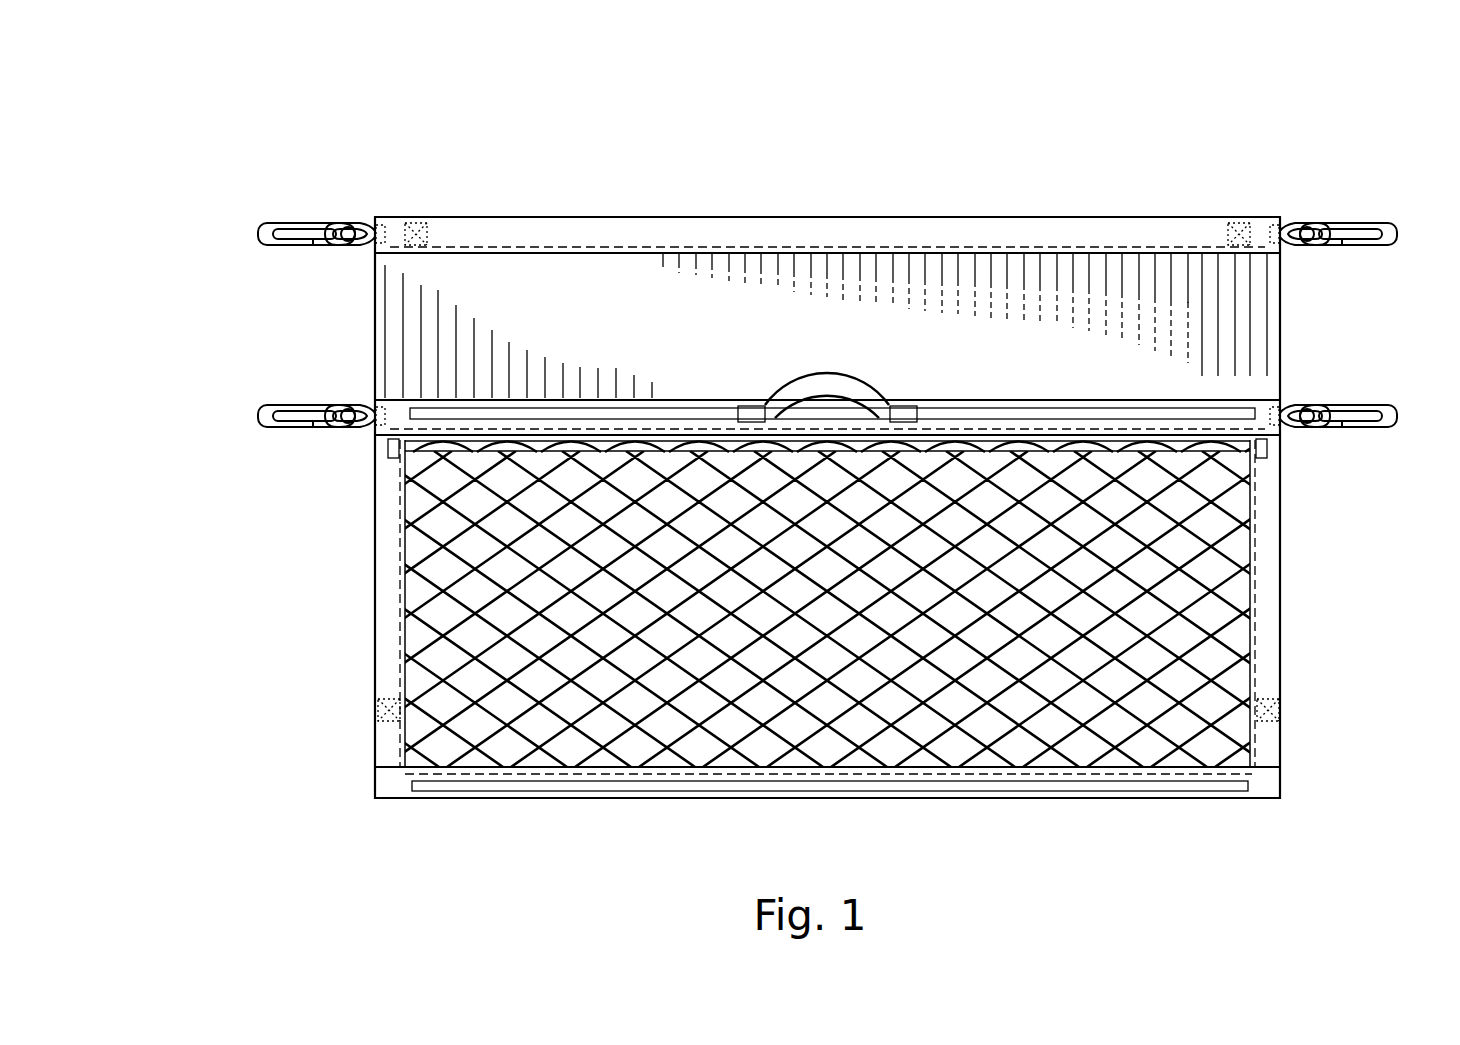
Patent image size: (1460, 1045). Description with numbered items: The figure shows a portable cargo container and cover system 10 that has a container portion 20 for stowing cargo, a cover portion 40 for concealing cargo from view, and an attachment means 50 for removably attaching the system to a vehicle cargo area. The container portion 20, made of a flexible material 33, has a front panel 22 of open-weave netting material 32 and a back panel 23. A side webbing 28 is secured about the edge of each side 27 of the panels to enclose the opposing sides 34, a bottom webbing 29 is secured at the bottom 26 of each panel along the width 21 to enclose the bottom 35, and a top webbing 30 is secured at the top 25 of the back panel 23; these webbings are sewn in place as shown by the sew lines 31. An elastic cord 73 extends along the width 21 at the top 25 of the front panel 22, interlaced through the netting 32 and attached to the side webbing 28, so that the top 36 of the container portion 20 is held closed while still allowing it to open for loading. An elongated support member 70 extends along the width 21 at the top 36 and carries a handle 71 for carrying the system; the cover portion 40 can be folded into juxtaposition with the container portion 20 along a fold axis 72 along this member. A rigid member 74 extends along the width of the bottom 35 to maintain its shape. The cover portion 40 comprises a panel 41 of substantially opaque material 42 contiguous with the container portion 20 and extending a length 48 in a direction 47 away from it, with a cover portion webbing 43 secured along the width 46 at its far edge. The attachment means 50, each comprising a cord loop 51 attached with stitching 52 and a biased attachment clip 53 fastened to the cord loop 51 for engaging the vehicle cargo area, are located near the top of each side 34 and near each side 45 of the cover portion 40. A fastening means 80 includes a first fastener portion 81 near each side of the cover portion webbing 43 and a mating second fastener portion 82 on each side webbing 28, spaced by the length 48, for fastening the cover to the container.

The portable cargo container and cover system 10 is at (262, 135).
The container portion 20 is at (1240, 818).
The width 21 is at (1005, 823).
The front panel 22 is at (730, 667).
The back panel 23 is at (512, 655).
The top 25 is at (893, 256).
The bottom 26 is at (957, 818).
The side 27 is at (335, 640).
The side webbing 28 is at (822, 603).
The bottom webbing 29 is at (827, 831).
The top webbing 30 is at (858, 291).
The sew lines 31 is at (398, 770).
The netting material 32 is at (865, 670).
The flexible material 33 is at (1148, 705).
The opposing sides 34 is at (375, 658).
The bottom 35 is at (258, 778).
The top 36 is at (215, 410).
The cover portion 40 is at (827, 183).
The panel 41 is at (660, 320).
The substantially opaque material 42 is at (535, 290).
The cover portion webbing 43 is at (620, 240).
The side 45 is at (1300, 335).
The width 46 is at (905, 178).
The direction 47 is at (150, 255).
The length 48 is at (326, 388).
The attachment means 50 is at (799, 301).
The cord loop 51 is at (340, 215).
The stitching 52 is at (378, 220).
The hook 53 is at (262, 228).
The elongated support member 70 is at (1180, 410).
The handle 71 is at (815, 375).
The fold axis 72 is at (1402, 420).
The elastic cord 73 is at (520, 445).
The rigid member 74 is at (560, 790).
The fastening means 80 is at (826, 427).
The first fastener portion 81 is at (416, 220).
The second fastener portion 82 is at (378, 710).